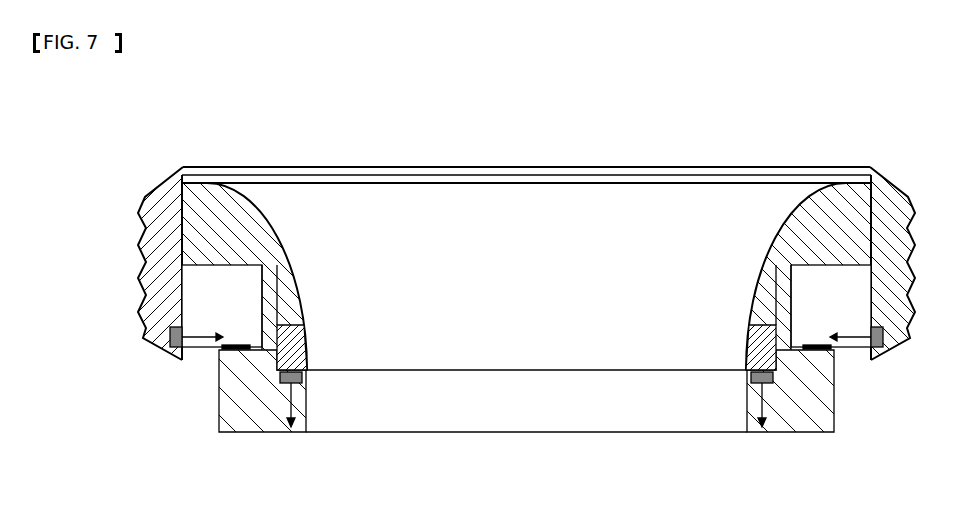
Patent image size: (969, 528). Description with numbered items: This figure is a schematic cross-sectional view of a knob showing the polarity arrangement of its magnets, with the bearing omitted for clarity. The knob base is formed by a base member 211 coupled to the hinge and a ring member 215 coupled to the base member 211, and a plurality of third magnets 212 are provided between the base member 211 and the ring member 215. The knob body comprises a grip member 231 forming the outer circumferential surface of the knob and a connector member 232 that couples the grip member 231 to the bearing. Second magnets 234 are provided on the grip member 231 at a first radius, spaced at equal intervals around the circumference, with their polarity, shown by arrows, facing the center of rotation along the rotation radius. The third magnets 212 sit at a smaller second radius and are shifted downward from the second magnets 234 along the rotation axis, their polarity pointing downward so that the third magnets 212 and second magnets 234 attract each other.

The base member 211 is at (248, 422).
The third magnet 212 is at (280, 375).
The ring member 215 is at (304, 343).
The grip member 231 is at (163, 190).
The connector member 232 is at (227, 210).
The second magnet 234 is at (167, 333).